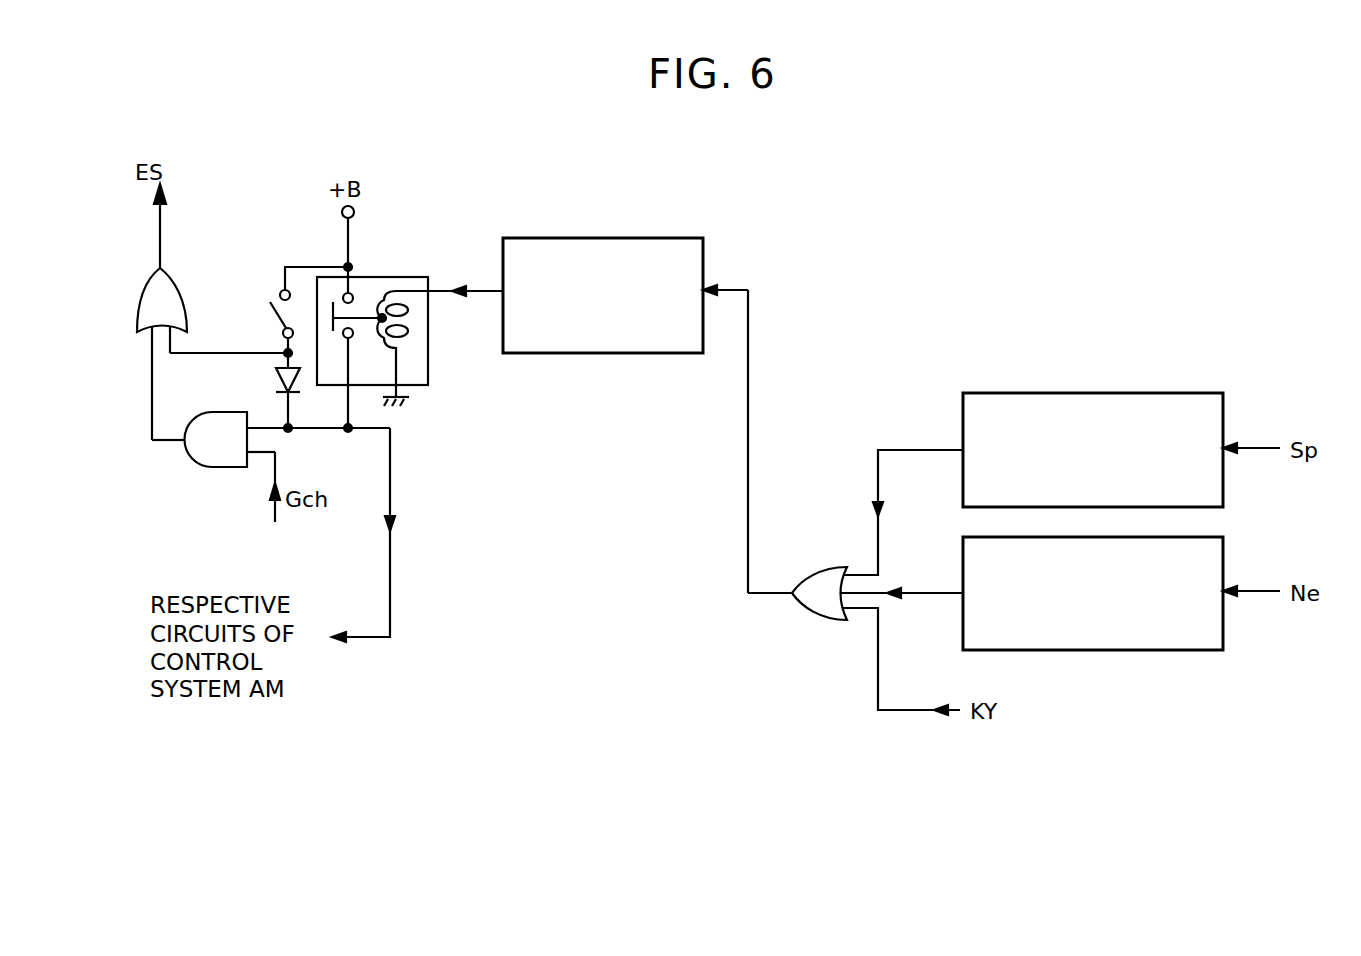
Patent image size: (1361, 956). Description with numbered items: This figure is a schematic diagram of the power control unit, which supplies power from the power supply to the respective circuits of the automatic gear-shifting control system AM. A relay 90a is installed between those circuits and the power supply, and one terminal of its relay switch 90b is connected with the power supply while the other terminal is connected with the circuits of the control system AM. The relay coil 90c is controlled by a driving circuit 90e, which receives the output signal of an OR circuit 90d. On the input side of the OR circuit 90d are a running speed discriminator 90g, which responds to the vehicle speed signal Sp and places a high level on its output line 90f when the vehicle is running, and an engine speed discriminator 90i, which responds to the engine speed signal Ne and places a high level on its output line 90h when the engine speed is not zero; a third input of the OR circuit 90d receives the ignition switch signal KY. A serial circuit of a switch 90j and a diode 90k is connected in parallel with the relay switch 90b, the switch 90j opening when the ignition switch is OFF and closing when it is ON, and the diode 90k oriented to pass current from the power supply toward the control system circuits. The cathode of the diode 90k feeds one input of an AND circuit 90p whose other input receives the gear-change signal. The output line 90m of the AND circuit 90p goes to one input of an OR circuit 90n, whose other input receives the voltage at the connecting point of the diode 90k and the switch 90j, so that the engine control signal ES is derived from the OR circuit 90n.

The relay 90a is at (375, 303).
The relay switch 90b is at (330, 300).
The relay coil 90c is at (405, 321).
The OR circuit 90d is at (817, 566).
The driving circuit 90e is at (588, 247).
The output line 90f is at (877, 478).
The running speed discriminator 90g is at (1060, 394).
The output line 90h is at (922, 597).
The engine speed discriminator 90i is at (1099, 641).
The switch 90j is at (268, 300).
The diode 90k is at (275, 372).
The output line 90m is at (151, 388).
The OR circuit 90n is at (146, 286).
The AND circuit 90p is at (209, 463).